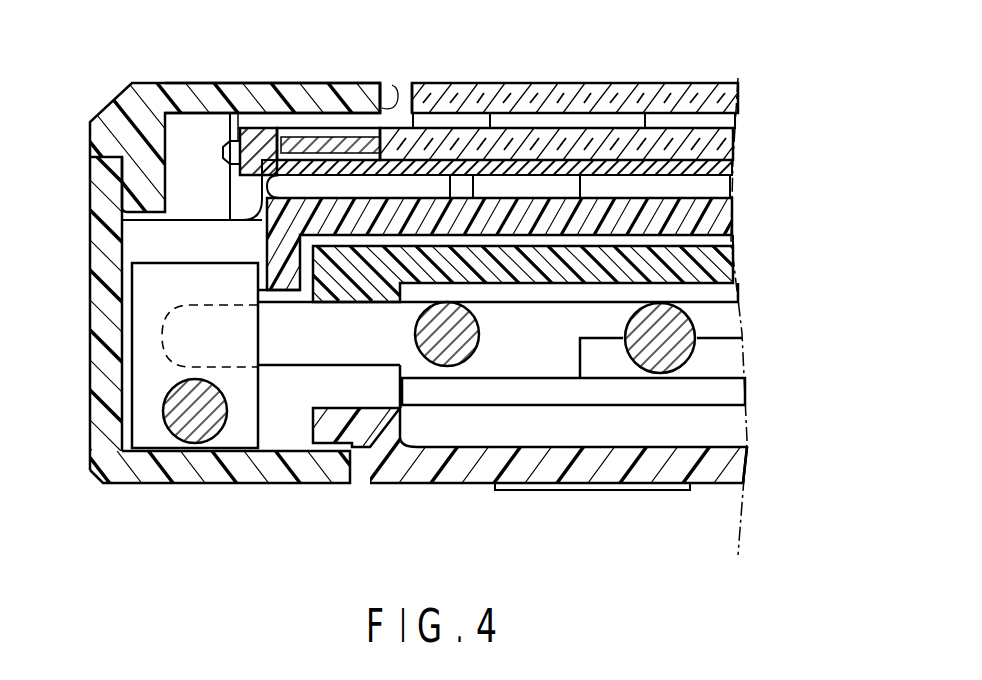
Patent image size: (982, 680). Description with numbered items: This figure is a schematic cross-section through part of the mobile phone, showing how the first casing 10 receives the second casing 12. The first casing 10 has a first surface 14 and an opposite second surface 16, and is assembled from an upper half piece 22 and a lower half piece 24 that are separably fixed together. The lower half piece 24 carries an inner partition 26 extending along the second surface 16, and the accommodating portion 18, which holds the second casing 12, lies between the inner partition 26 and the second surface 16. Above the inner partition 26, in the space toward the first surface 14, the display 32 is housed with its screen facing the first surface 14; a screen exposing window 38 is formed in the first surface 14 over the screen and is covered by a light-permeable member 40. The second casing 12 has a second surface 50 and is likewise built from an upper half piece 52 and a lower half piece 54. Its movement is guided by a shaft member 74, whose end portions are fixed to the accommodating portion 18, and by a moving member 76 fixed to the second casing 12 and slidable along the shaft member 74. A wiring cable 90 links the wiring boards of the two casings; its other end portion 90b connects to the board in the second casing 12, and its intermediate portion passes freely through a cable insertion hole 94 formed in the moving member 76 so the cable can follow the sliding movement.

The first casing 10 is at (106, 100).
The second casing 12 is at (466, 492).
The first surface 14 is at (318, 83).
The second surface 16 is at (131, 484).
The accommodating portion 18 is at (742, 228).
The upper half piece 22 is at (90, 138).
The lower half piece 24 is at (90, 193).
The inner partition 26 is at (398, 213).
The display 32 is at (258, 128).
The screen exposing window 38 is at (392, 97).
The light-permeable member 40 is at (586, 83).
The second surface 50 is at (688, 491).
The upper half piece 52 is at (742, 263).
The lower half piece 54 is at (728, 470).
The shaft member 74 is at (213, 440).
The moving member 76 is at (150, 370).
The wiring cable 90 is at (690, 312).
The other end portion 90b is at (742, 355).
The cable insertion hole 94 is at (168, 330).